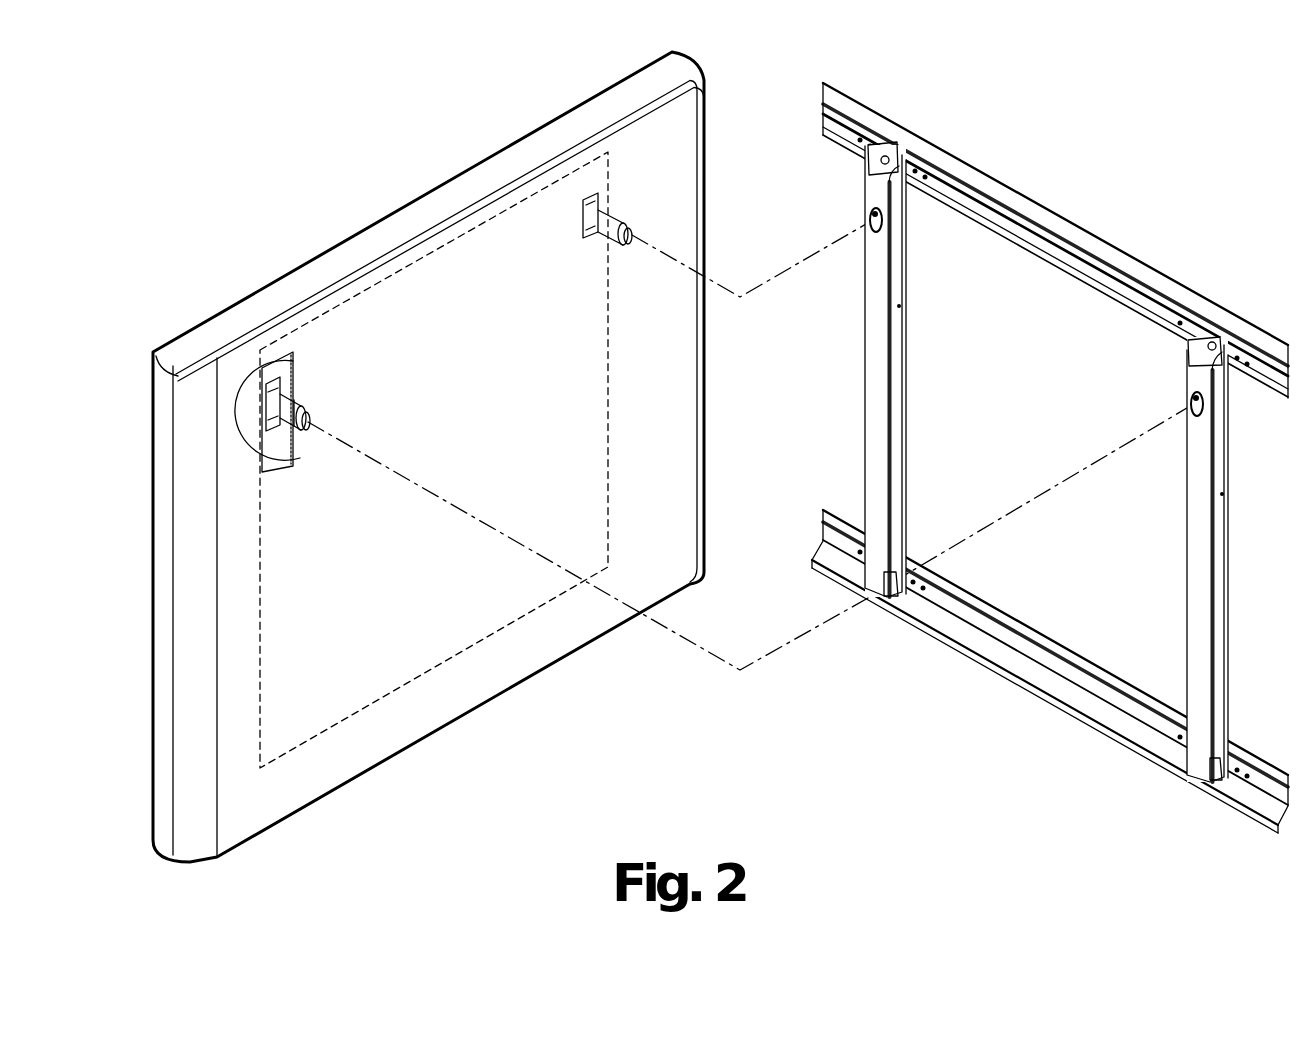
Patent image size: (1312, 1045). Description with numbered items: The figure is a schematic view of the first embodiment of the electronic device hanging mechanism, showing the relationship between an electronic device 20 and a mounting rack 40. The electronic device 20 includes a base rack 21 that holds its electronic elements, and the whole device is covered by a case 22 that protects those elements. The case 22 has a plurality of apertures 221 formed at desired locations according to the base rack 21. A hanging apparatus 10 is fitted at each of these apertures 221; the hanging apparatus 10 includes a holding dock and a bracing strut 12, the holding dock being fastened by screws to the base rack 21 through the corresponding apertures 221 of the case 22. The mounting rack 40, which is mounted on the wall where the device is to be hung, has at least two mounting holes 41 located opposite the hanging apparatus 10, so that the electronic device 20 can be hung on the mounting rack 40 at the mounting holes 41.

The hanging apparatus 10 is at (270, 382).
The bracing strut 12 is at (305, 402).
The electronic device 20 is at (336, 215).
The base rack 21 is at (277, 436).
The case 22 is at (653, 155).
The apertures 221 is at (612, 224).
The mounting rack 40 is at (1072, 198).
The mounting holes 41 is at (871, 215).